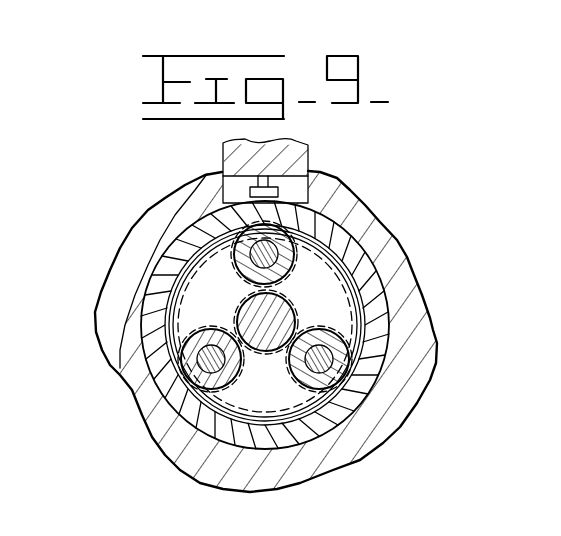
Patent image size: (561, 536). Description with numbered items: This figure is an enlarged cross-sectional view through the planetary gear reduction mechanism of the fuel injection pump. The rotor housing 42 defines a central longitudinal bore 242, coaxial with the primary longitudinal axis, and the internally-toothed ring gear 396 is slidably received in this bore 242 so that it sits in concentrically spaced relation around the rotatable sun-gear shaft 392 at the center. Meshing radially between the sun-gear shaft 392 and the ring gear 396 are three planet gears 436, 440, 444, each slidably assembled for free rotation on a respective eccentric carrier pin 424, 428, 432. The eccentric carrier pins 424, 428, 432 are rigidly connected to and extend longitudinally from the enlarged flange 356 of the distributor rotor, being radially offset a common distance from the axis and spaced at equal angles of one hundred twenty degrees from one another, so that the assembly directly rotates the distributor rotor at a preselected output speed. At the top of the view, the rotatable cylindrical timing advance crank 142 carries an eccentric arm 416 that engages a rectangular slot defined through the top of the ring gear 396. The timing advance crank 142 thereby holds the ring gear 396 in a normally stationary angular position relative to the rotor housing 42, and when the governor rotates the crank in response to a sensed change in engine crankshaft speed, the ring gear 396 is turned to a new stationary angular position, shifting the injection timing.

The rotor housing 42 is at (420, 304).
The timing advance crank 142 is at (307, 151).
The central longitudinal bore 242 is at (165, 343).
The flange 356 is at (368, 216).
The sun-gear shaft 392 is at (283, 291).
The ring gear 396 is at (408, 259).
The eccentric arm 416 is at (222, 189).
The eccentric carrier pin 424 is at (248, 286).
The eccentric carrier pin 428 is at (347, 310).
The eccentric carrier pin 432 is at (183, 353).
The planet gear 436 is at (238, 304).
The planet gear 440 is at (298, 392).
The planet gear 444 is at (158, 395).